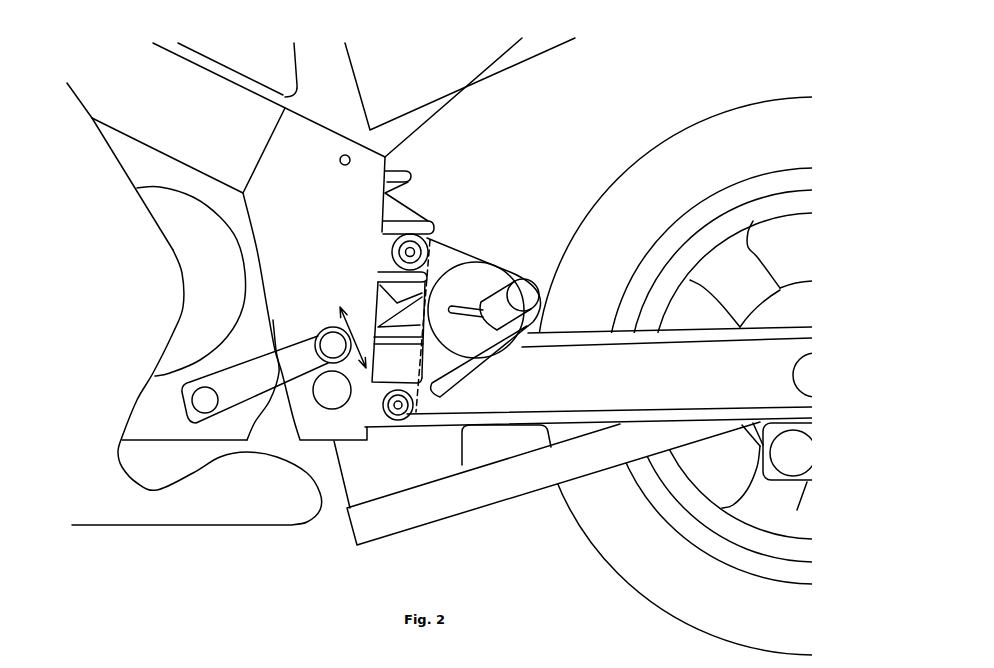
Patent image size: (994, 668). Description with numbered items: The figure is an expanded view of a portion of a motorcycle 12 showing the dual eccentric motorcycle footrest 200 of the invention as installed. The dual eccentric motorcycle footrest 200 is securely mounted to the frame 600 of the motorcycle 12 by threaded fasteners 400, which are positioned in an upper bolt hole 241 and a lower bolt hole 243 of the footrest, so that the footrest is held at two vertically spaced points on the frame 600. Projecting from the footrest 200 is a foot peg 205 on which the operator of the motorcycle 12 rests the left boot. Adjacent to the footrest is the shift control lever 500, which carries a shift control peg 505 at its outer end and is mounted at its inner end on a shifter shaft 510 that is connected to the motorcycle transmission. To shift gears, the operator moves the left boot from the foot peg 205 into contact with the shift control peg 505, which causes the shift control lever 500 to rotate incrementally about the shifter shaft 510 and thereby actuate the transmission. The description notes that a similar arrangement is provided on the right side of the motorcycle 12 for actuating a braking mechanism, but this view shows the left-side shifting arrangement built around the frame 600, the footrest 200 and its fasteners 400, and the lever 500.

The motorcycle 12 is at (127, 275).
The dual eccentric motorcycle footrest 200 is at (505, 228).
The foot peg 205 is at (542, 295).
The upper bolt hole 241 is at (422, 240).
The lower bolt hole 243 is at (408, 418).
The threaded fasteners 400 is at (428, 238).
The shift control lever 500 is at (247, 387).
The shift control peg 505 is at (335, 345).
The shifter shaft 510 is at (192, 400).
The frame 600 is at (303, 193).